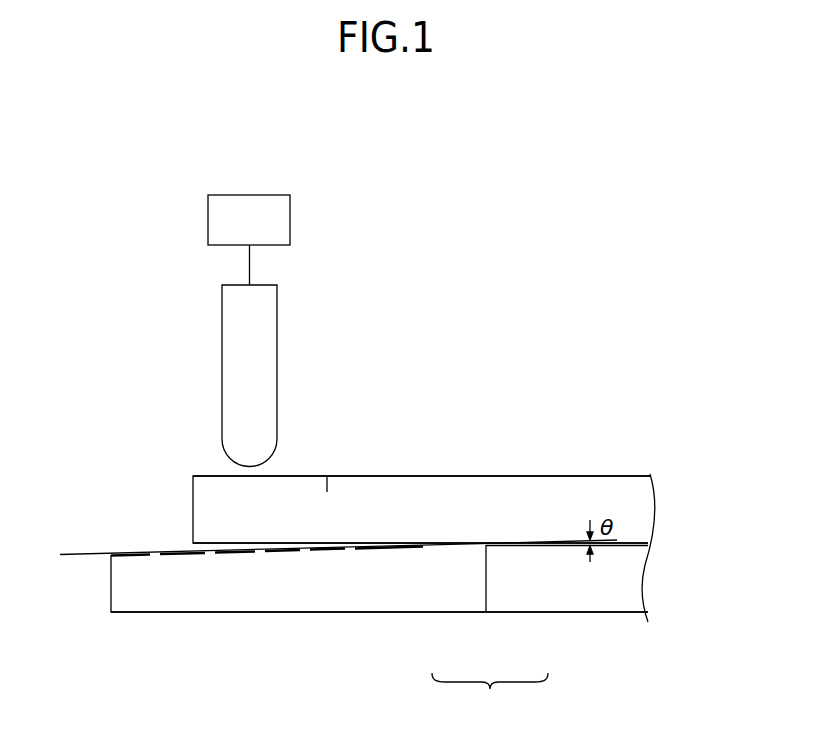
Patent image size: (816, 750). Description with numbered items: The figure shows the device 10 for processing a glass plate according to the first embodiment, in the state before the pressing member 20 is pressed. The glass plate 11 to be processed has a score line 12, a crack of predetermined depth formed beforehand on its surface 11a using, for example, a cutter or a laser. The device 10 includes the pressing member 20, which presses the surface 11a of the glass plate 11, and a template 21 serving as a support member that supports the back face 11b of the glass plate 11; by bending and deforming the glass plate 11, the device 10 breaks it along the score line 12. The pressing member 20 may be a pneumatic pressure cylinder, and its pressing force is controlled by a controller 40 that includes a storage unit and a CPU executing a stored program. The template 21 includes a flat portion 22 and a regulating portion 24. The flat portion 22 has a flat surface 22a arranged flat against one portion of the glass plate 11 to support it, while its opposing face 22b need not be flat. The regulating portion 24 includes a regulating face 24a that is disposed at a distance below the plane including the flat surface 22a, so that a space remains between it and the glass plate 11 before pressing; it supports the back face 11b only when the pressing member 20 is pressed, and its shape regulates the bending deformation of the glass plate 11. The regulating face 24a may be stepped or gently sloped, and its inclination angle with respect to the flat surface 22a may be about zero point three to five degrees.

The device for processing a glass plate 10 is at (92, 220).
The controller 40 is at (249, 203).
The pressing member 20 is at (270, 352).
The glass plate 11 is at (486, 485).
The surface 11a is at (634, 482).
The back face 11b is at (635, 543).
The score line 12 is at (327, 488).
The template 21 is at (503, 717).
The flat portion 22 is at (523, 605).
The flat surface 22a is at (635, 547).
The face 22b is at (635, 611).
The regulating portion 24 is at (452, 605).
The regulating face 24a is at (140, 557).